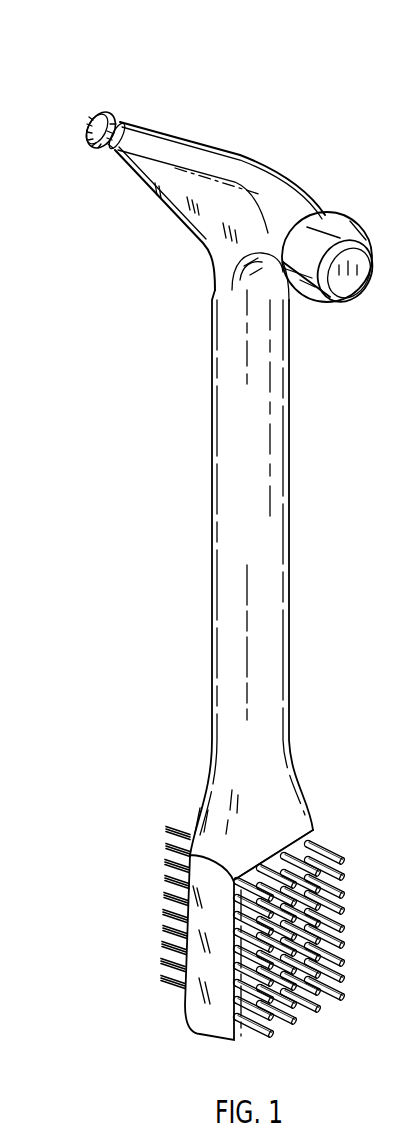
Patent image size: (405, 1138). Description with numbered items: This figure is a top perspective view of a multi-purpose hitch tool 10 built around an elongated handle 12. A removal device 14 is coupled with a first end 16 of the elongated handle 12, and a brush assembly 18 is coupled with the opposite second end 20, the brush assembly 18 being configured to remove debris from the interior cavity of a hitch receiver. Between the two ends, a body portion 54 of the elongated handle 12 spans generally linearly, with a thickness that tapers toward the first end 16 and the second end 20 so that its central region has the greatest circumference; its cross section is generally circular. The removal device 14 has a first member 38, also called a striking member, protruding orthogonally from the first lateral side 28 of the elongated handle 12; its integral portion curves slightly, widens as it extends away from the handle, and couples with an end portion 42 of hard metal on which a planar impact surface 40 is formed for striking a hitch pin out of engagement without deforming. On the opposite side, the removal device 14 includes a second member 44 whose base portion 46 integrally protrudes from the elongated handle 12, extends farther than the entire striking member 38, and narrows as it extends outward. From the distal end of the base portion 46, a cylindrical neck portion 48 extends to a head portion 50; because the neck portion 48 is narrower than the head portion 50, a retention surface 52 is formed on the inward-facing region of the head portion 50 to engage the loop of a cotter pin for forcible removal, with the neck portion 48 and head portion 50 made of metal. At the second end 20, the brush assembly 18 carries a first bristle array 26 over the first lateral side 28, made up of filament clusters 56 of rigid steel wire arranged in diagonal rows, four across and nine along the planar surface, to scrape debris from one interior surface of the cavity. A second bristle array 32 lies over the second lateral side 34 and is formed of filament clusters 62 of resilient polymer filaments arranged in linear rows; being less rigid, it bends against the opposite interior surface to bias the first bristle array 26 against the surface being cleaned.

The multi-purpose hitch tool 10 is at (121, 61).
The elongated handle 12 is at (221, 537).
The removal device 14 is at (296, 159).
The first end 16 is at (186, 283).
The brush assembly 18 is at (149, 963).
The second end 20 is at (159, 791).
The first bristle array 26 is at (307, 1021).
The first lateral side 28 is at (280, 820).
The second bristle array 32 is at (157, 993).
The second lateral side 34 is at (149, 864).
The first member 38 is at (306, 306).
The planar impact surface 40 is at (356, 276).
The end portion 42 is at (334, 228).
The second member 44 is at (154, 222).
The base portion 46 is at (163, 157).
The neck portion 48 is at (116, 117).
The head portion 50 is at (105, 111).
The retention surface 52 is at (104, 154).
The body portion 54 is at (260, 473).
The filament clusters 56 is at (330, 870).
The filament clusters 62 is at (160, 870).